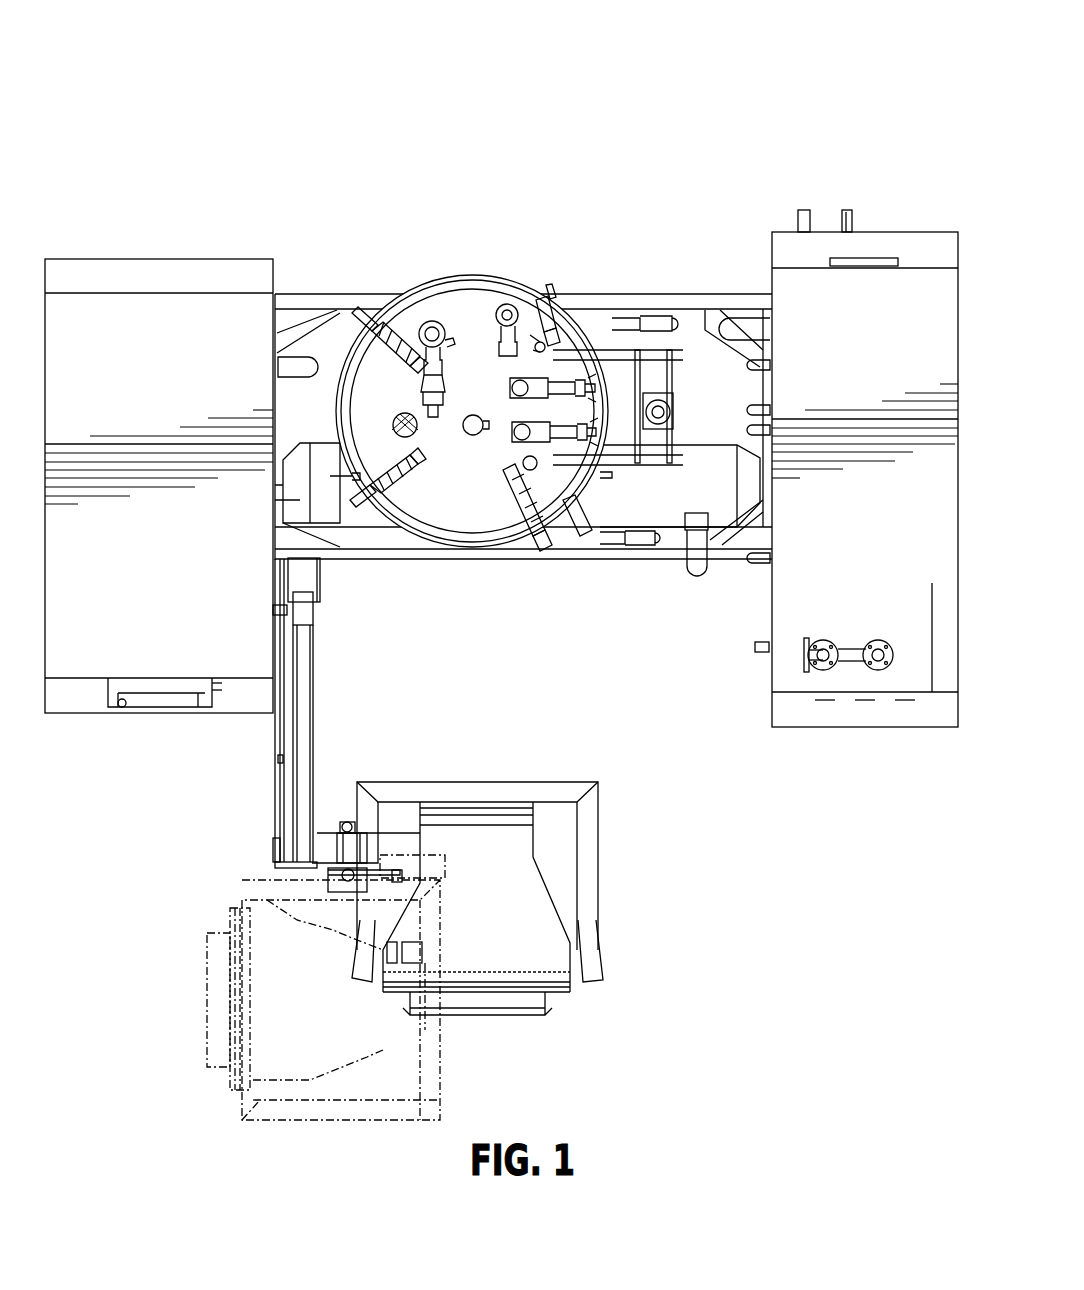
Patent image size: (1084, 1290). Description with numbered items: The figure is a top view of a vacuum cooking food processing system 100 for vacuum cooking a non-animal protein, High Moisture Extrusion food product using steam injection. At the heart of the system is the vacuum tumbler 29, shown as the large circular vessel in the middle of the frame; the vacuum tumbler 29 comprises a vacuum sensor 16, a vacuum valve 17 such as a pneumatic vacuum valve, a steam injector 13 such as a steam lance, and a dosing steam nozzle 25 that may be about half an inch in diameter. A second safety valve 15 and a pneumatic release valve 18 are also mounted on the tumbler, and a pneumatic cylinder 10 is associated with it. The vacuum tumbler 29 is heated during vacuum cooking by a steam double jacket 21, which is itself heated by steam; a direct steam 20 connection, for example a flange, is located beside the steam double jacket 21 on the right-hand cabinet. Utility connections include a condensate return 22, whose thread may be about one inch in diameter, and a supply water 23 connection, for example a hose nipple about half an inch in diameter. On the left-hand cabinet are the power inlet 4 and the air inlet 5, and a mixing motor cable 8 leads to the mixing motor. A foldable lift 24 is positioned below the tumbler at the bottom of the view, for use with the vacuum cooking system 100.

The vacuum cooking food processing system 100 is at (832, 94).
The power inlet 4 is at (232, 346).
The air inlet 5 is at (192, 346).
The mixing motor cable 8 is at (350, 340).
The pneumatic cylinder 10 is at (412, 305).
The vacuum tumbler 29 is at (475, 302).
The steam injector 13 is at (499, 305).
The second safety valve 15 is at (450, 315).
The vacuum sensor 16 is at (470, 434).
The vacuum valve 17 is at (598, 390).
The pneumatic release valve 18 is at (557, 312).
The direct steam 20 is at (866, 667).
The steam double jacket 21 is at (823, 668).
The condensate return 22 is at (800, 211).
The supply water 23 is at (365, 466).
The foldable lift 24 is at (587, 880).
The dosing steam nozzle 25 is at (533, 470).